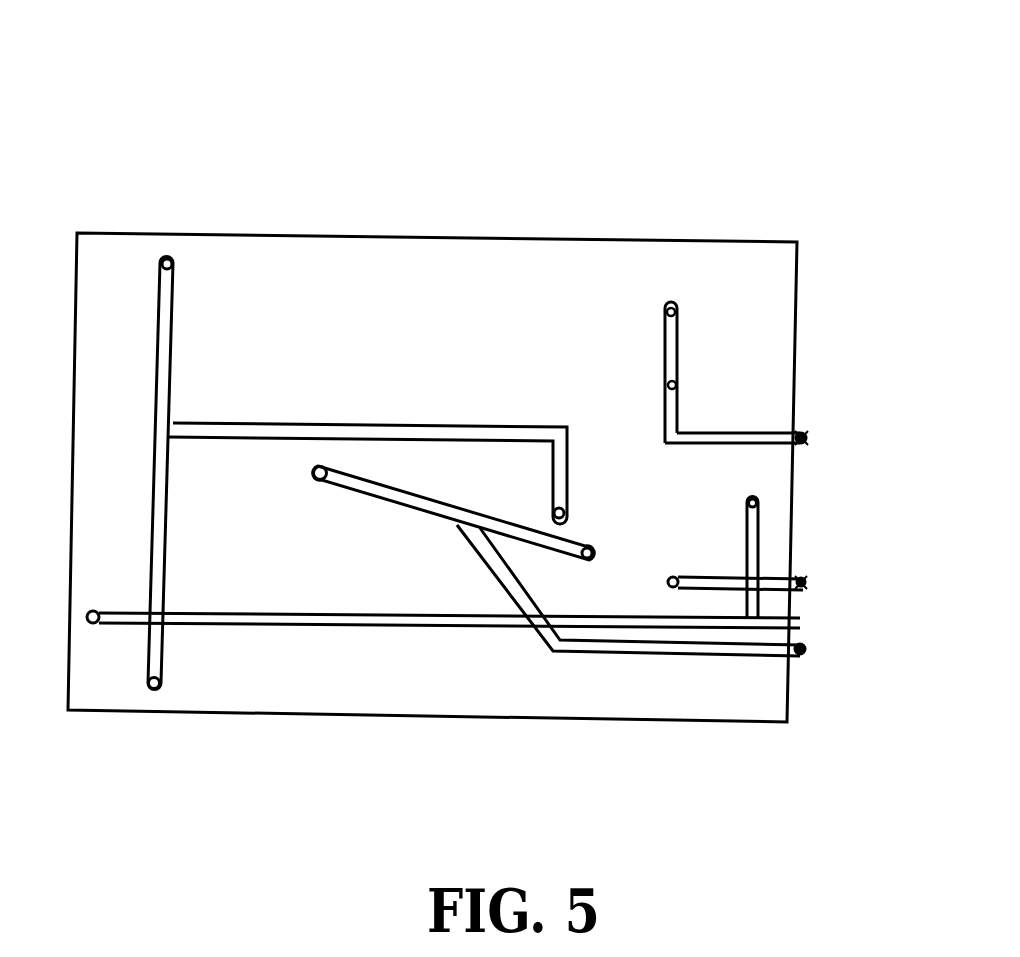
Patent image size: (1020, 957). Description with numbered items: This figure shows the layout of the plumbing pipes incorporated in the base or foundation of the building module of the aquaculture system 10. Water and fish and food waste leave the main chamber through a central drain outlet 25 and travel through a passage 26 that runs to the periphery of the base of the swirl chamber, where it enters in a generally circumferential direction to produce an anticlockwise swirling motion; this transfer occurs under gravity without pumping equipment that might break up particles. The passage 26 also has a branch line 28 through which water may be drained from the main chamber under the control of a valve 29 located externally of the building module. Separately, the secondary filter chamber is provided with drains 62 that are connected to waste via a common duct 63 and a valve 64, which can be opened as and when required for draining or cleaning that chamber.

The aquaculture system 10 is at (768, 186).
The central drain outlet 25 is at (332, 453).
The passage 26 is at (405, 512).
The branch line 28 is at (537, 633).
The valve 29 is at (812, 652).
The drains 62 is at (676, 313).
The common duct 63 is at (757, 433).
The valve 64 is at (807, 443).